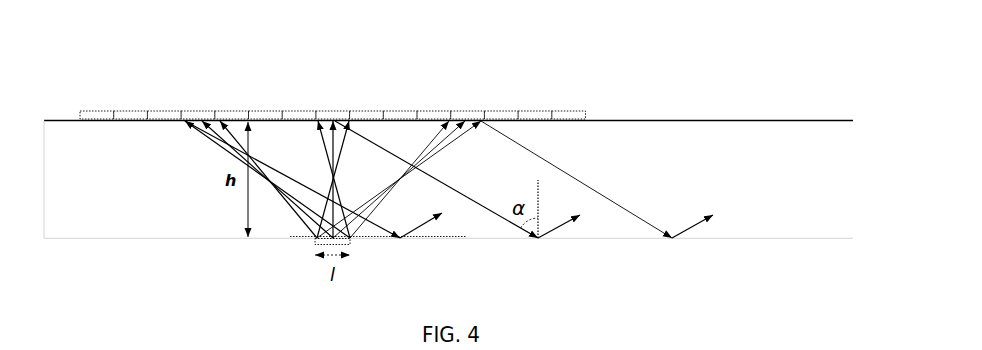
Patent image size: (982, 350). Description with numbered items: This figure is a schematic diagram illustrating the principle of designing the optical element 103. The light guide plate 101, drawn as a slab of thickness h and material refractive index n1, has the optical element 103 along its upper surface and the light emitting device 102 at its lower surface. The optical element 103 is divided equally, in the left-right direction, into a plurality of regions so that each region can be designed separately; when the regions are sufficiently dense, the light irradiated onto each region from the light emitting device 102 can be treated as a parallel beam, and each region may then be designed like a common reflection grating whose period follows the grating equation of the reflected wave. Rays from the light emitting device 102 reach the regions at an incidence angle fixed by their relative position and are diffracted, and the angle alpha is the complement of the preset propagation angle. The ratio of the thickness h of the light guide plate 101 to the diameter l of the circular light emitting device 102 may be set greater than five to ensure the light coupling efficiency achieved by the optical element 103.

The light guide plate 101 is at (737, 143).
The light emitting device 102 is at (351, 245).
The optical element 103 is at (586, 106).